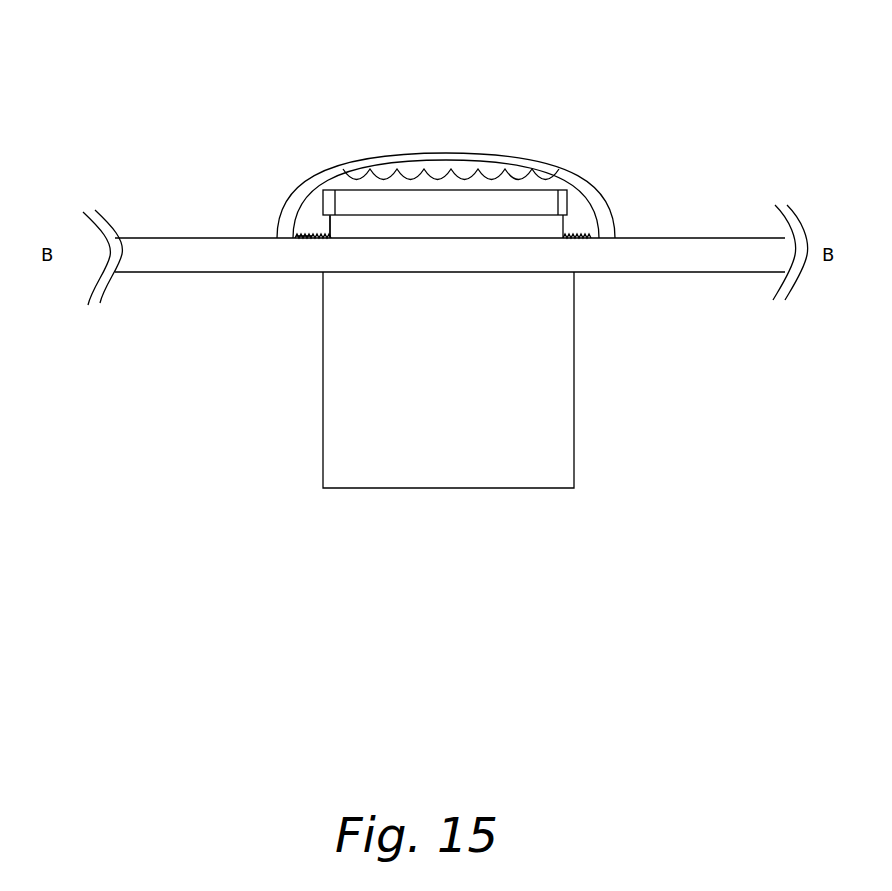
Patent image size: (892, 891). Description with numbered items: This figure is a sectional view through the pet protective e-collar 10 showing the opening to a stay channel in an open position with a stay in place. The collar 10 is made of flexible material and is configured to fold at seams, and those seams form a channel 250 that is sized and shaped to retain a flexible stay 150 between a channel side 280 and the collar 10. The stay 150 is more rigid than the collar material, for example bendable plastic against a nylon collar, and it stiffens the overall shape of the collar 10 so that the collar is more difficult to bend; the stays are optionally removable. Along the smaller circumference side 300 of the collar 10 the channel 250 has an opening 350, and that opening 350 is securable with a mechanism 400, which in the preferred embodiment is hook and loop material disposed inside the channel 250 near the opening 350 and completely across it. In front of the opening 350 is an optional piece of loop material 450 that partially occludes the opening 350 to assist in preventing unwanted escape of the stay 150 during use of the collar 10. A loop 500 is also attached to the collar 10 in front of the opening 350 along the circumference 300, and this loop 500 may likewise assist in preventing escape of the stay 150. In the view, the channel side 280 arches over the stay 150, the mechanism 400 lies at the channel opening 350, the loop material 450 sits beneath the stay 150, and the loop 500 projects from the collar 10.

The pet protective e-collar 10 is at (461, 189).
The smaller circumference side 300 is at (653, 245).
The stay 150 is at (517, 203).
The channel side 280 is at (302, 183).
The mechanism 400 is at (432, 178).
The piece of loop material 450 is at (550, 225).
The loop 500 is at (352, 390).
The channel 250 is at (220, 190).
The opening 350 is at (308, 222).